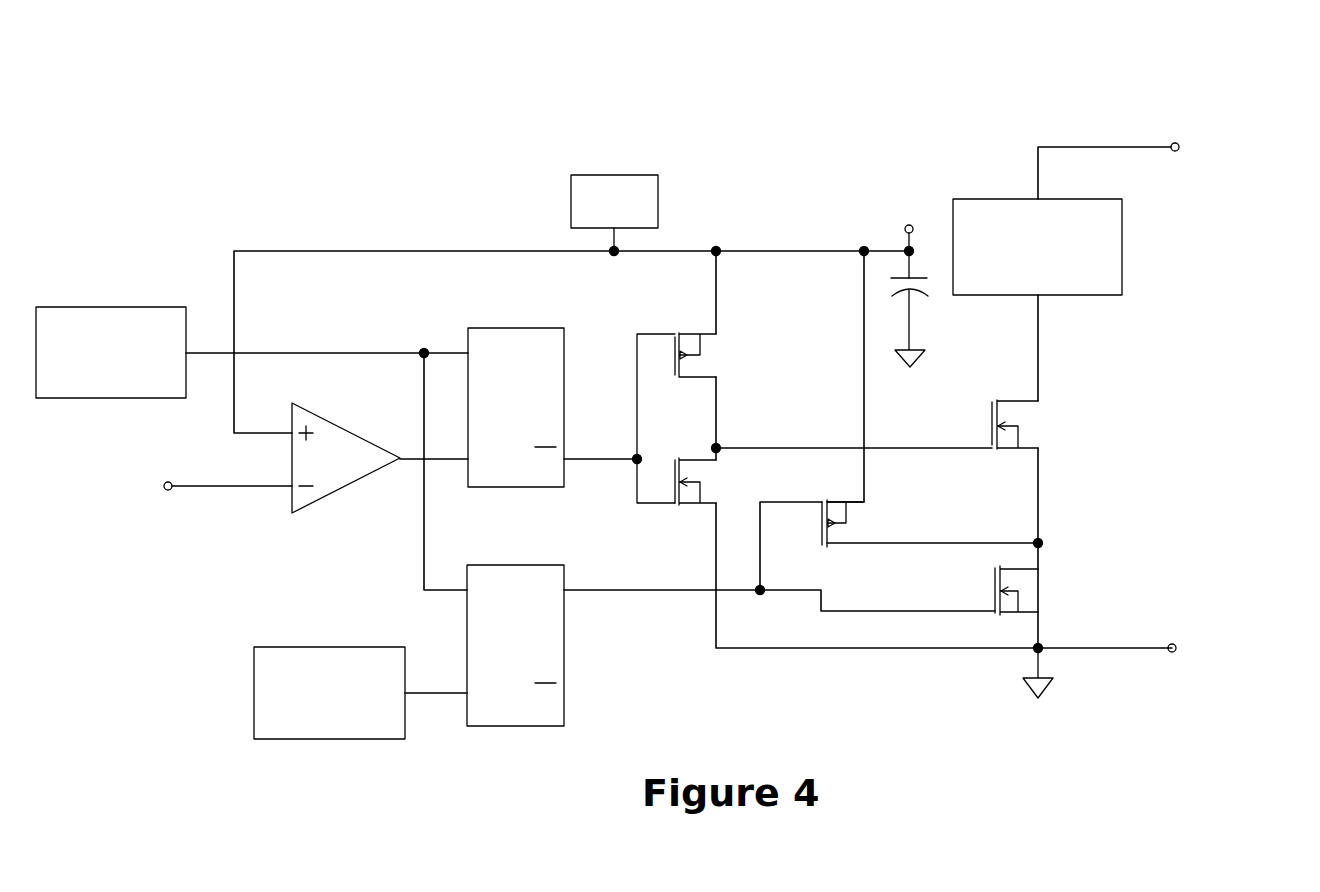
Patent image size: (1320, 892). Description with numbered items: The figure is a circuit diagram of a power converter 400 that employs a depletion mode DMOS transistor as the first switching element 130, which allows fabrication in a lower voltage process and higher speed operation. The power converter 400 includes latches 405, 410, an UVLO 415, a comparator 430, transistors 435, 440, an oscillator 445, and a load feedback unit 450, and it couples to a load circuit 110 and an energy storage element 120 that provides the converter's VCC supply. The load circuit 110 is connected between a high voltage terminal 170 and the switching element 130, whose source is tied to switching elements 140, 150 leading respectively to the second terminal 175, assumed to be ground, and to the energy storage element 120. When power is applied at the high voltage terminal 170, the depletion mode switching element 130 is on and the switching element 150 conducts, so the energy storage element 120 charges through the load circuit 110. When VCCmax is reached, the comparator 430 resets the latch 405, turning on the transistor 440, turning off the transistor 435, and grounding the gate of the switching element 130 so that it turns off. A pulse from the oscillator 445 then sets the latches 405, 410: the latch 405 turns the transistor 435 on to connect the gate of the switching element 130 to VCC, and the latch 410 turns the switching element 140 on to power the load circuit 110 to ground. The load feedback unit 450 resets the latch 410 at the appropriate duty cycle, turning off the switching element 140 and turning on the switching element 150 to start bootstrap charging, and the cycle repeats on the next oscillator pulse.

The power converter 400 is at (243, 122).
The oscillator 445 is at (128, 306).
The comparator 430 is at (337, 425).
The latch 405 is at (508, 327).
The latch 410 is at (522, 562).
The UVLO 415 is at (615, 173).
The transistor 435 is at (679, 332).
The transistor 440 is at (679, 505).
The energy storage element 120 is at (928, 296).
The high voltage terminal 170 is at (1179, 142).
The second terminal 175 is at (1176, 640).
The load circuit 110 is at (1023, 272).
The first switching element 130 is at (988, 430).
The switching element 150 is at (827, 500).
The switching element 140 is at (993, 580).
The load feedback unit 450 is at (347, 748).